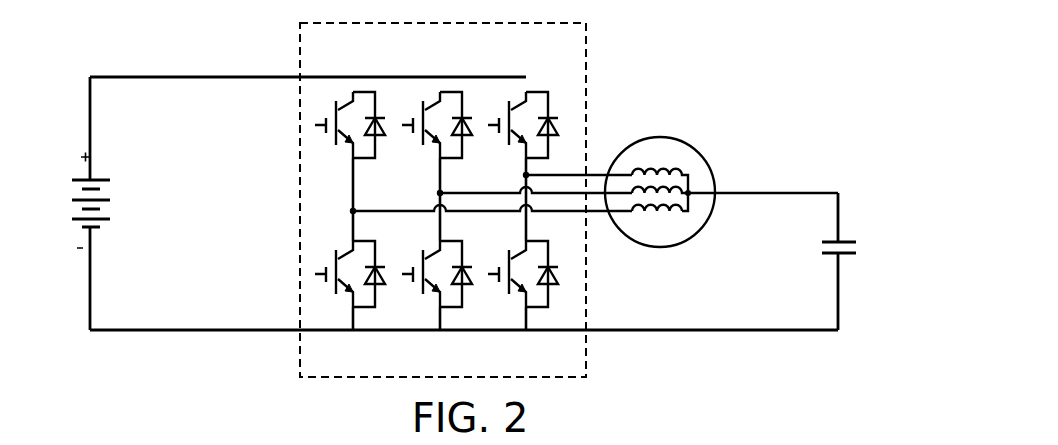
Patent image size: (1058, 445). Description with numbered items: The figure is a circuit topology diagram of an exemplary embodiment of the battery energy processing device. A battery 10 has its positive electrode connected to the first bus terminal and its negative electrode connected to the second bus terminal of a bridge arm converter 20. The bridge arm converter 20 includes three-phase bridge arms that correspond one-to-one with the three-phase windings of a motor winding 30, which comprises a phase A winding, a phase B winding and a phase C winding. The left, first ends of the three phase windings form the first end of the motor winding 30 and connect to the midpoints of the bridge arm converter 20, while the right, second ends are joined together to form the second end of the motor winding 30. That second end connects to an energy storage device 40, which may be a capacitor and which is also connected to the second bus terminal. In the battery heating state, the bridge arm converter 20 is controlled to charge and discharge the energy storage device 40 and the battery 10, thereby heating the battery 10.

The battery 10 is at (63, 199).
The bridge arm converter 20 is at (588, 41).
The motor winding 30 is at (680, 128).
The energy storage device 40 is at (865, 245).